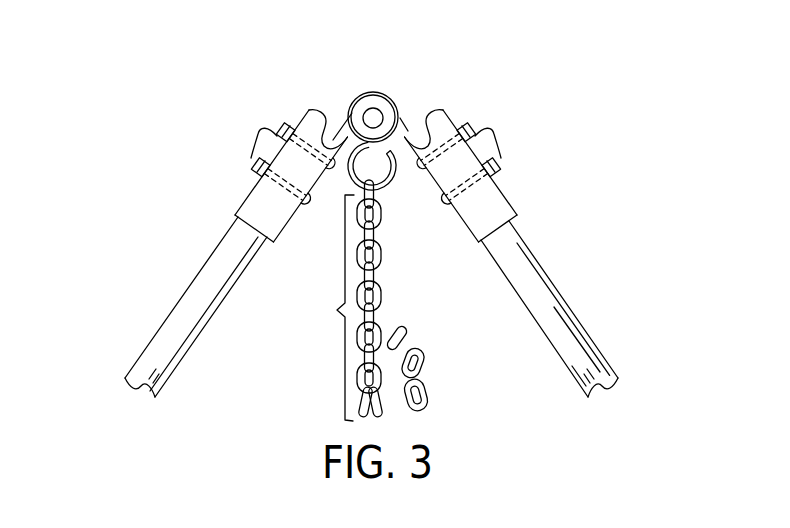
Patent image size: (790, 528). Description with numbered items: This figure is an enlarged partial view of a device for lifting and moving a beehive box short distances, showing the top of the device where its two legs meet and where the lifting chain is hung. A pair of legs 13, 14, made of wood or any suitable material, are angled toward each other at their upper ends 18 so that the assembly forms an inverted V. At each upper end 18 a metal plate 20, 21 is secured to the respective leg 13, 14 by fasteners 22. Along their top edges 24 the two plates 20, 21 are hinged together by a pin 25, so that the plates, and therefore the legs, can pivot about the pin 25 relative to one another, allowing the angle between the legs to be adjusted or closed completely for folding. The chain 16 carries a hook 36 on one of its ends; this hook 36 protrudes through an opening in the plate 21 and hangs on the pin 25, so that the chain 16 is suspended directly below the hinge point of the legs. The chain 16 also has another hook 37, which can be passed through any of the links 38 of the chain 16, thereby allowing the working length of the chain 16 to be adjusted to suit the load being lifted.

The leg 13 is at (164, 324).
The leg 14 is at (578, 321).
The chain 16 is at (382, 297).
The upper end 18 is at (309, 110).
The metal plate 20 is at (283, 223).
The metal plate 21 is at (463, 225).
The fasteners 22 is at (253, 160).
The top edges 24 is at (331, 110).
The pin 25 is at (375, 110).
The hook 36 is at (350, 183).
The hook 37 is at (404, 331).
The links 38 is at (337, 310).